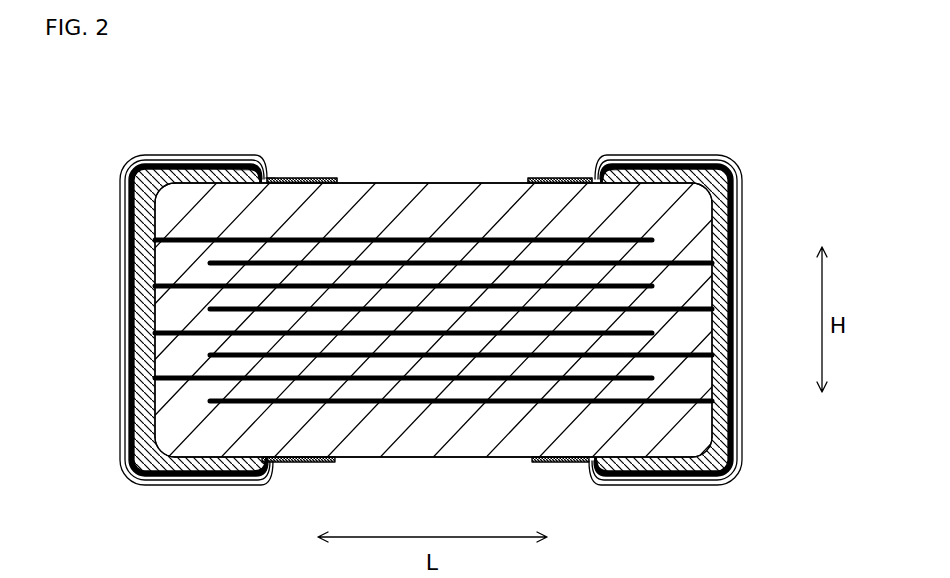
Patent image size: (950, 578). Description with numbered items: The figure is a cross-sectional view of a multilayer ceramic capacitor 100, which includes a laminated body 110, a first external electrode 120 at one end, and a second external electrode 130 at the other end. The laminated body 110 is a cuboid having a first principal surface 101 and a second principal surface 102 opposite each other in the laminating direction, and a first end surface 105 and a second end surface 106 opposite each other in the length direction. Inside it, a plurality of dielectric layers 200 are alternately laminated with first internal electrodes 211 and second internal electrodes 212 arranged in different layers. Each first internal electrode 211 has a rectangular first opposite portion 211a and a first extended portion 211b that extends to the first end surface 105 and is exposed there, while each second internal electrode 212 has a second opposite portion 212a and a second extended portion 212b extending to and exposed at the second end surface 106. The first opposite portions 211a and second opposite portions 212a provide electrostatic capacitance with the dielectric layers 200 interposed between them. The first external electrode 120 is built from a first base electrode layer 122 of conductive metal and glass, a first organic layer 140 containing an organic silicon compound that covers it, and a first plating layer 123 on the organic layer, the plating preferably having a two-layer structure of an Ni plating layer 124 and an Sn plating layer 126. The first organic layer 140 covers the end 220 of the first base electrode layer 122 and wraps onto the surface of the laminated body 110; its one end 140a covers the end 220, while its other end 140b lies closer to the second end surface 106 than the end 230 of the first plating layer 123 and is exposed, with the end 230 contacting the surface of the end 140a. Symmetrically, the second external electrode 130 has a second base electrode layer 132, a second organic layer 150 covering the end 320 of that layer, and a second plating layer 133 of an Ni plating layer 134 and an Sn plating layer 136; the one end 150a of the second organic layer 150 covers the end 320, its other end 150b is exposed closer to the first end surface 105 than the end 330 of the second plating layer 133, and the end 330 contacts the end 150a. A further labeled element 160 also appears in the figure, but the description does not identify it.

The multilayer ceramic capacitor 100 is at (132, 102).
The first principal surface 101 is at (390, 184).
The second principal surface 102 is at (493, 459).
The first end surface 105 is at (138, 405).
The second end surface 106 is at (712, 345).
The laminated body 110 is at (418, 460).
The first external electrode 120 is at (150, 158).
The first base electrode layer 122 is at (142, 338).
The first plating layer 123 is at (150, 533).
The Ni plating layer 124 is at (190, 477).
The Sn plating layer 126 is at (237, 483).
The second external electrode 130 is at (711, 150).
The second base electrode layer 132 is at (722, 306).
The second plating layer 133 is at (610, 533).
The Ni plating layer 134 is at (642, 475).
The Sn plating layer 136 is at (700, 483).
The first organic layer 140 is at (306, 177).
The one end of the first organic layer 140a is at (267, 185).
The other end of the first organic layer 140b is at (329, 178).
The second organic layer 150 is at (563, 177).
The one end of the second organic layer 150a is at (596, 186).
The other end of the second organic layer 150b is at (530, 177).
The interface layer 160 is at (135, 300).
The dielectric layers 200 is at (375, 423).
The first internal electrodes 211 is at (255, 379).
The first opposite portion 211a is at (410, 238).
The first extended portion 211b is at (165, 287).
The second internal electrodes 212 is at (558, 402).
The second opposite portion 212a is at (458, 261).
The second extended portion 212b is at (698, 306).
The end of the first base electrode layer 220 is at (247, 183).
The end of the first plating layer 230 is at (270, 176).
The end of the second base electrode layer 320 is at (602, 184).
The end of the second plating layer 330 is at (612, 178).